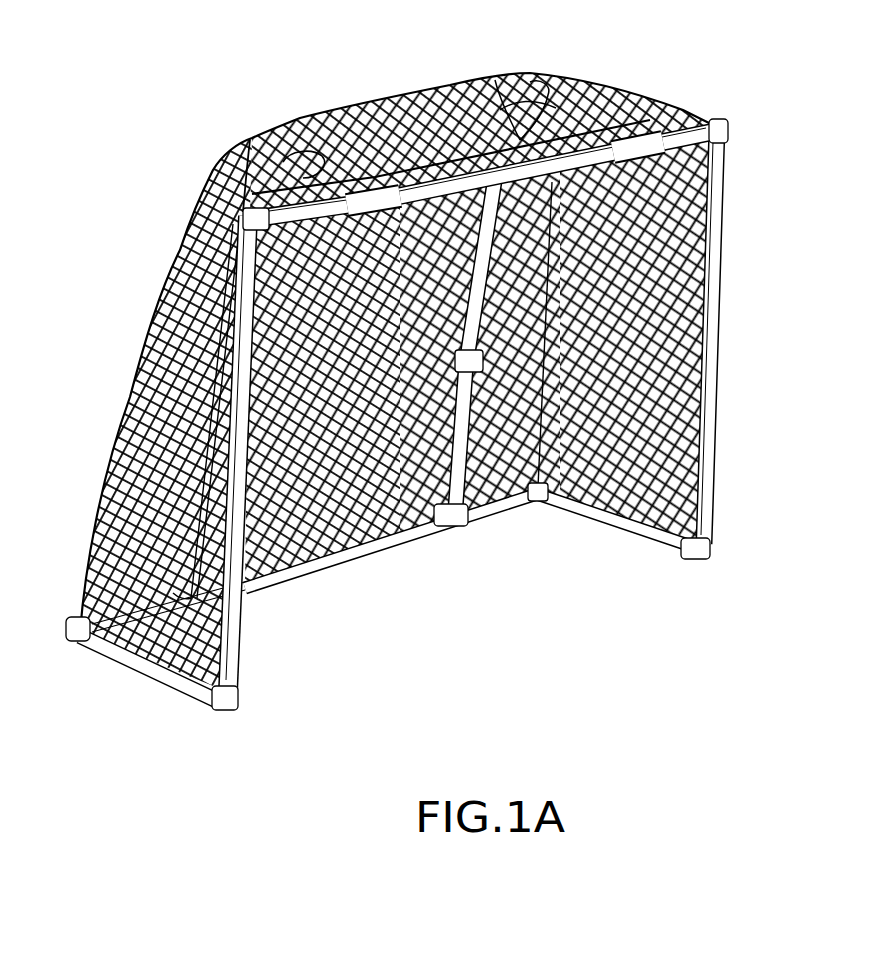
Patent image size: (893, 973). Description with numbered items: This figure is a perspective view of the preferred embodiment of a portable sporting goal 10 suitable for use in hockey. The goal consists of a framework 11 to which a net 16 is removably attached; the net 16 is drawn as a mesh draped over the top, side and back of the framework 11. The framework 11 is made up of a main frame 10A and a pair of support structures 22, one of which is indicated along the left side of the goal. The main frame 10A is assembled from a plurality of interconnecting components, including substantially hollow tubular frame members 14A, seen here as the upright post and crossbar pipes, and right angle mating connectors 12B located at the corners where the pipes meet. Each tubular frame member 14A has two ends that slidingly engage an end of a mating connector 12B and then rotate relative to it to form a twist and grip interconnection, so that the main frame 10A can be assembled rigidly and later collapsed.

The portable sporting goal 10 is at (422, 397).
The main frame 10A is at (152, 678).
The framework 11 is at (454, 528).
The right angle mating connector 12B is at (726, 125).
The tubular frame member 14A is at (724, 283).
The net 16 is at (433, 108).
The support structure 22 is at (208, 138).